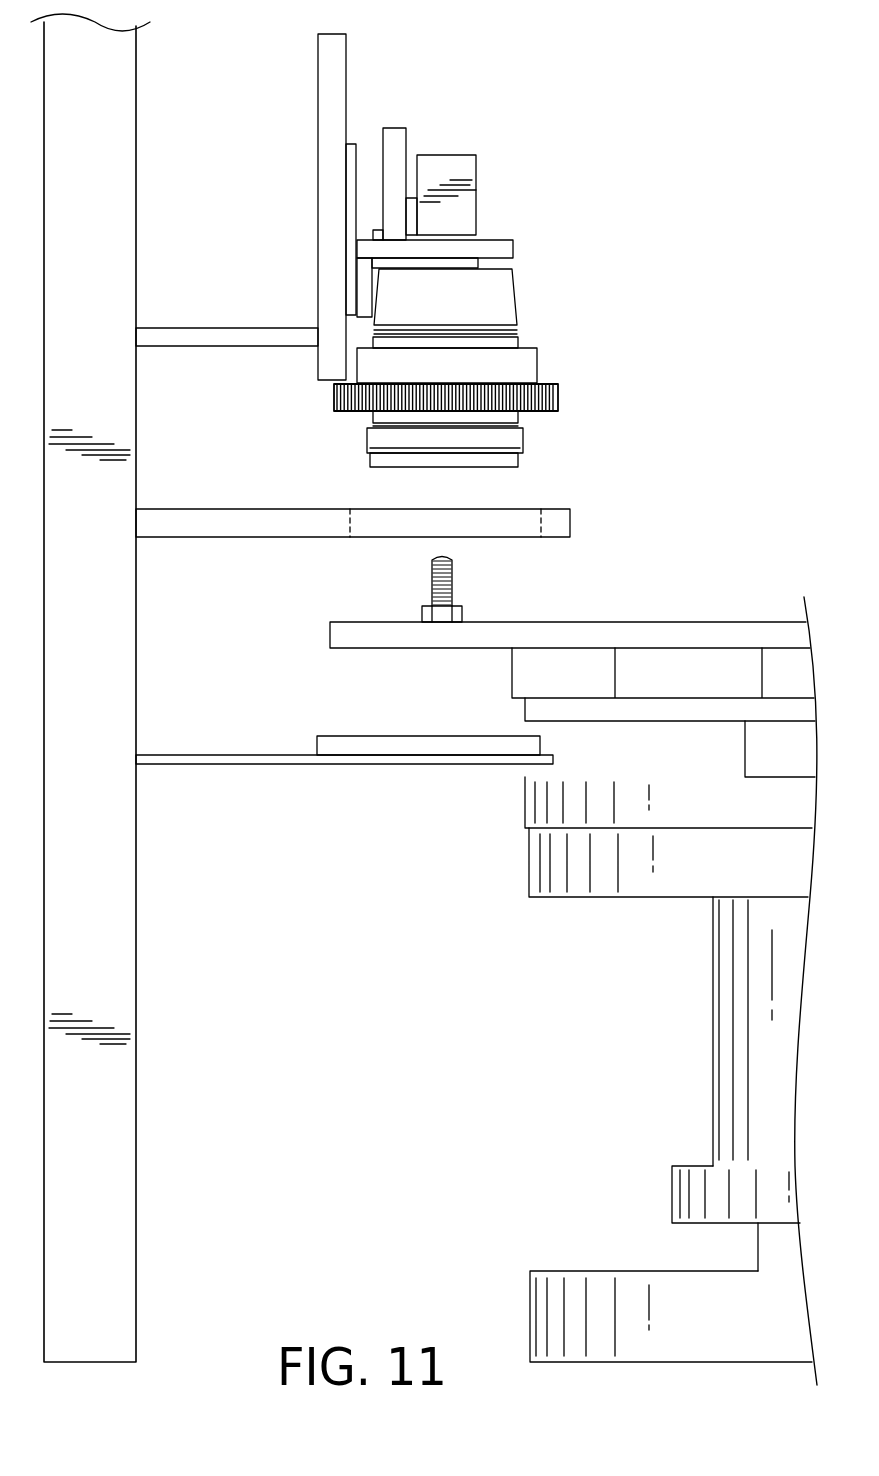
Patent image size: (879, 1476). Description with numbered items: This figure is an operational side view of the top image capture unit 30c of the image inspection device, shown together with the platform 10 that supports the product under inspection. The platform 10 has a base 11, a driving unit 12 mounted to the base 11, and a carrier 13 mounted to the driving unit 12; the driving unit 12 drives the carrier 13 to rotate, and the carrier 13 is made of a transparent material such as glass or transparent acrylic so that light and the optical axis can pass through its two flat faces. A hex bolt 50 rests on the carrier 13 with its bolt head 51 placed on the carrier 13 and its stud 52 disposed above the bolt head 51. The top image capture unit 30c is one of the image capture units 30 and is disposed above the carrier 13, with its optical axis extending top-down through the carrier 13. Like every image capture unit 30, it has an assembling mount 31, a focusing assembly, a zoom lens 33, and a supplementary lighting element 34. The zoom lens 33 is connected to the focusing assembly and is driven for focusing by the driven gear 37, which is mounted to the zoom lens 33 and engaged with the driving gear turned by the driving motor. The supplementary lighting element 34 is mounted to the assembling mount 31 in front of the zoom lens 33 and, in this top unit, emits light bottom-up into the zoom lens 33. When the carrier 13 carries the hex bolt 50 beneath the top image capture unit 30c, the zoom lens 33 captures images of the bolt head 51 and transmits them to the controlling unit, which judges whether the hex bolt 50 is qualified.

The platform 10 is at (573, 964).
The base 11 is at (605, 1290).
The driving unit 12 is at (740, 1015).
The carrier 13 is at (695, 635).
The image capture unit 30 is at (415, 250).
The top image capture unit 30c is at (512, 180).
The assembling mount 31 is at (332, 87).
The zoom lens 33 is at (512, 441).
The supplementary lighting element 34 is at (345, 745).
The driven gear 37 is at (560, 398).
The hex bolt 50 is at (469, 582).
The bolt head 51 is at (462, 613).
The stud 52 is at (440, 585).